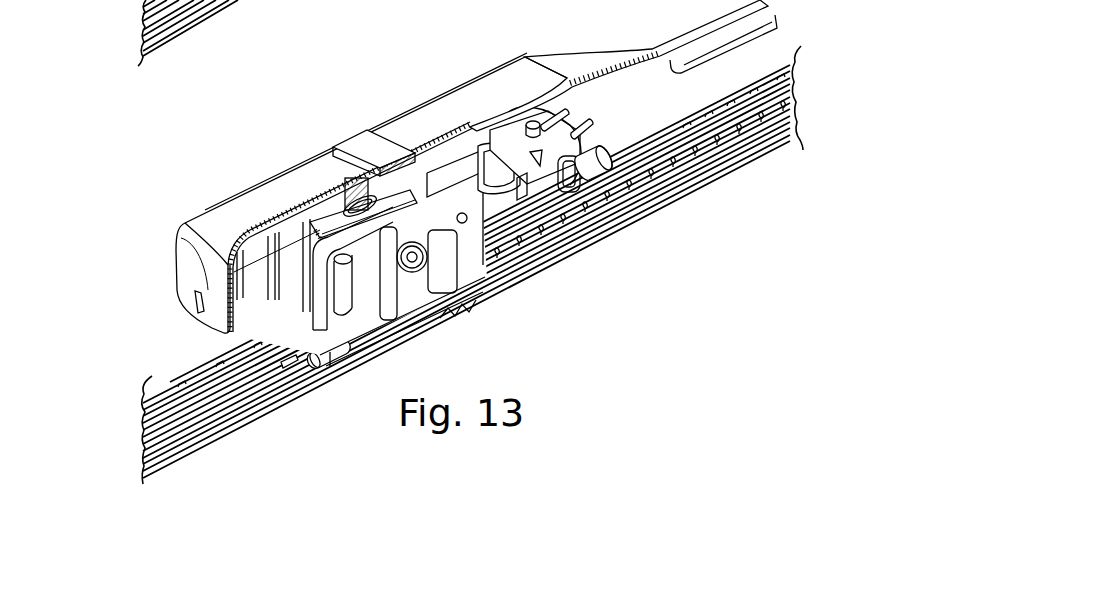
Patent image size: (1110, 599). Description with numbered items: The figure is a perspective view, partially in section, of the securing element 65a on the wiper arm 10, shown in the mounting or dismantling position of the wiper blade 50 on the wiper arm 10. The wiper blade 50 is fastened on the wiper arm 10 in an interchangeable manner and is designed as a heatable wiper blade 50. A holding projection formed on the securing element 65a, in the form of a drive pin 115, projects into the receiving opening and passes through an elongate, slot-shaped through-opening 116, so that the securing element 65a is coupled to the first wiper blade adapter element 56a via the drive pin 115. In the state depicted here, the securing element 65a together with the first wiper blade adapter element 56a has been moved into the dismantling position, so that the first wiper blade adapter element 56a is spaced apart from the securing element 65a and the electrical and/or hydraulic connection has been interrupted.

The wiper arm 10 is at (565, 67).
The wiper blade 50 is at (182, 366).
The first wiper blade adapter element 56a is at (443, 183).
The securing element 65a is at (240, 218).
The drive pin 115 is at (362, 196).
The slot-shaped through-opening 116 is at (322, 218).